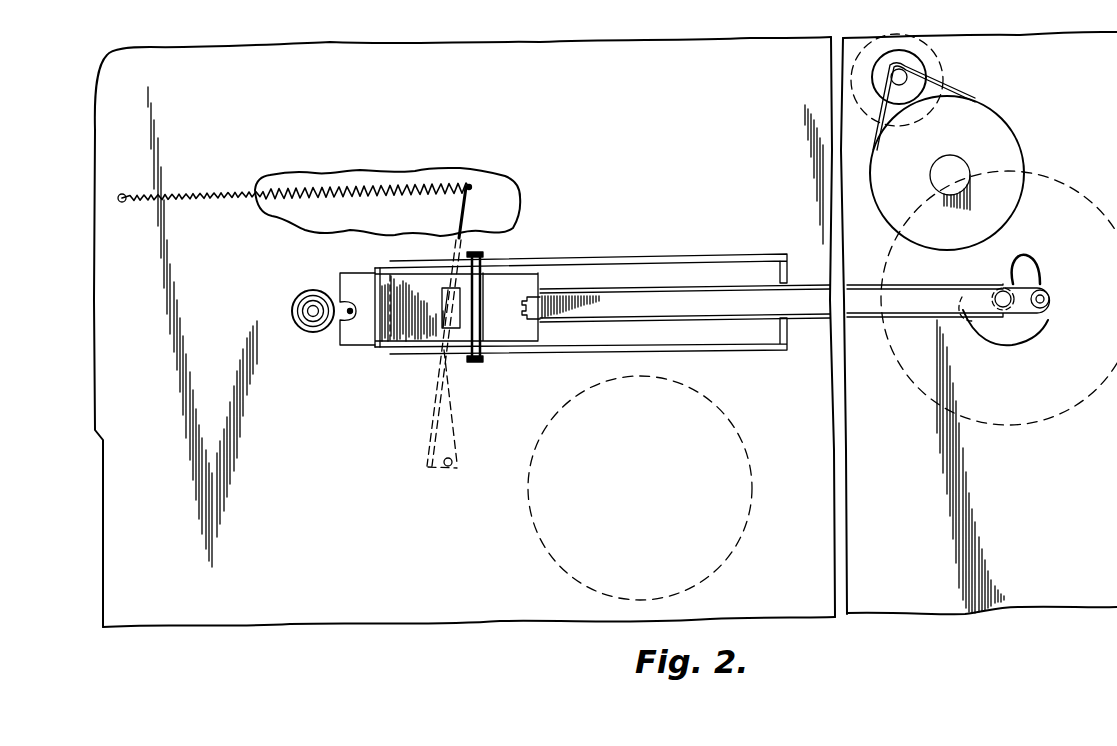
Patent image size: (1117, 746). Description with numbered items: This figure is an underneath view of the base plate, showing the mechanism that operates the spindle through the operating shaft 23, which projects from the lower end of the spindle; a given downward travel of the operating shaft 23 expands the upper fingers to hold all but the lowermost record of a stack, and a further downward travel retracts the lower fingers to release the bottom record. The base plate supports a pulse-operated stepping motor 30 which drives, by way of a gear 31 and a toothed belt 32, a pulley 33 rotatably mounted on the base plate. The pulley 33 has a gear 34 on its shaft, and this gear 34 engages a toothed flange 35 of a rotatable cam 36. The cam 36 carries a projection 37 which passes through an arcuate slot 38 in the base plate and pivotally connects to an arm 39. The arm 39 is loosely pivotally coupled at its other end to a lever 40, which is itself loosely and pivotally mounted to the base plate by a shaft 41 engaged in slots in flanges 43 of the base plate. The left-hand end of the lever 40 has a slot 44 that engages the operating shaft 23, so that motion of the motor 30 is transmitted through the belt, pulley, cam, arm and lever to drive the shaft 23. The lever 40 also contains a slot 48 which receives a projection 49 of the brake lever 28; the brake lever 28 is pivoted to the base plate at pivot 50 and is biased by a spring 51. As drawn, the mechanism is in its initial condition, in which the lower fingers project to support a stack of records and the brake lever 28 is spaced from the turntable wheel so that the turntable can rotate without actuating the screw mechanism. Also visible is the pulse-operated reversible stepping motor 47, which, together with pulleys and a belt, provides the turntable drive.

The operating shaft 23 is at (302, 306).
The brake lever 28 is at (426, 404).
The pulse-operated stepping motor 30 is at (898, 92).
The gear 31 is at (905, 74).
The toothed belt 32 is at (948, 88).
The pulley 33 is at (1007, 150).
The gear 34 is at (946, 165).
The toothed flange 35 is at (870, 266).
The rotatable cam 36 is at (926, 363).
The projection 37 is at (1052, 298).
The arcuate slot 38 is at (1022, 328).
The arm 39 is at (813, 312).
The lever 40 is at (528, 282).
The shaft 41 is at (472, 315).
The flanges 43 is at (695, 255).
The slot 44 is at (347, 304).
The pulse-operated reversible stepping motor 47 is at (530, 516).
The slot 48 is at (442, 297).
The projection 49 is at (440, 311).
The pivot 50 is at (453, 462).
The spring 51 is at (381, 185).